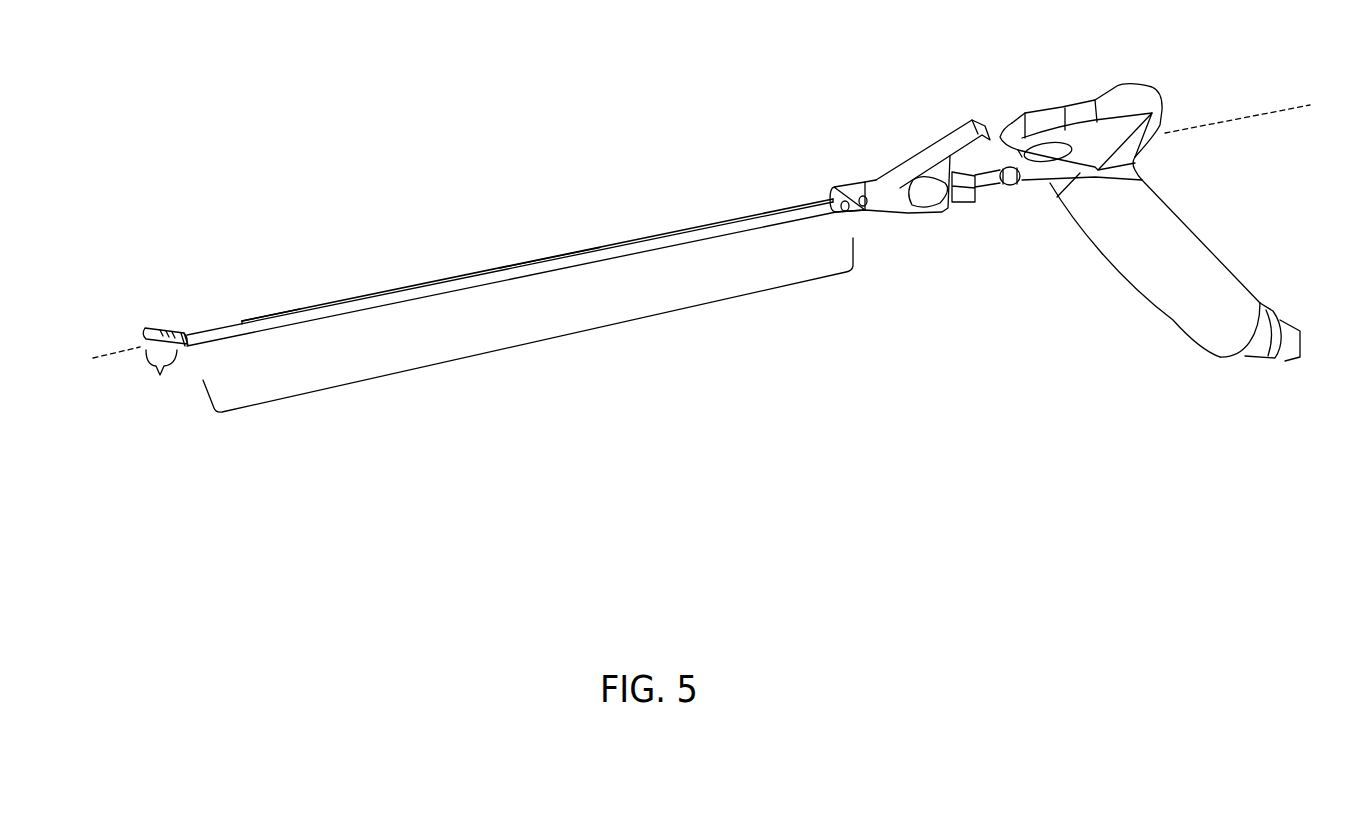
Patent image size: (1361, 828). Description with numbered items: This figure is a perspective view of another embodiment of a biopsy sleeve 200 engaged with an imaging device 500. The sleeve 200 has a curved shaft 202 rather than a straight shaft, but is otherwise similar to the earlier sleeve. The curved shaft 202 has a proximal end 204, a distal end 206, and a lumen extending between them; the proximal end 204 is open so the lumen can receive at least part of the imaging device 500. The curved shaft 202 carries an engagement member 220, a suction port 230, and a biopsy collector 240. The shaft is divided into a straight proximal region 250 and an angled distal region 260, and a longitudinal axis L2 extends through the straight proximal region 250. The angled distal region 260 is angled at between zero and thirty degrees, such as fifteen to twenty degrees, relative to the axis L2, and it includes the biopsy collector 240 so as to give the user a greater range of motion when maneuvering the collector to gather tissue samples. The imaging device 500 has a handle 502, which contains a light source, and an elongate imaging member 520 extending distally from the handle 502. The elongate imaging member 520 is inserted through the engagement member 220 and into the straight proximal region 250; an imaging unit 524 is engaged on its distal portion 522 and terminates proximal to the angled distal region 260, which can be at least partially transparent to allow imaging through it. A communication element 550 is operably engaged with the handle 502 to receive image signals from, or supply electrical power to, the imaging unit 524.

The sleeve 200 is at (438, 212).
The curved shaft 202 is at (220, 327).
The proximal end 204 is at (832, 198).
The distal end 206 is at (145, 327).
The engagement member 220 is at (892, 160).
The suction port 230 is at (957, 130).
The biopsy collector 240 is at (170, 320).
The straight proximal region 250 is at (512, 343).
The angled distal region 260 is at (157, 379).
The imaging device 500 is at (1103, 298).
The handle 502 is at (1167, 320).
The elongate imaging member 520 is at (542, 260).
The distal portion 522 is at (273, 307).
The imaging unit 524 is at (242, 325).
The communication element 550 is at (1152, 90).
The longitudinal axis L2 is at (700, 234).